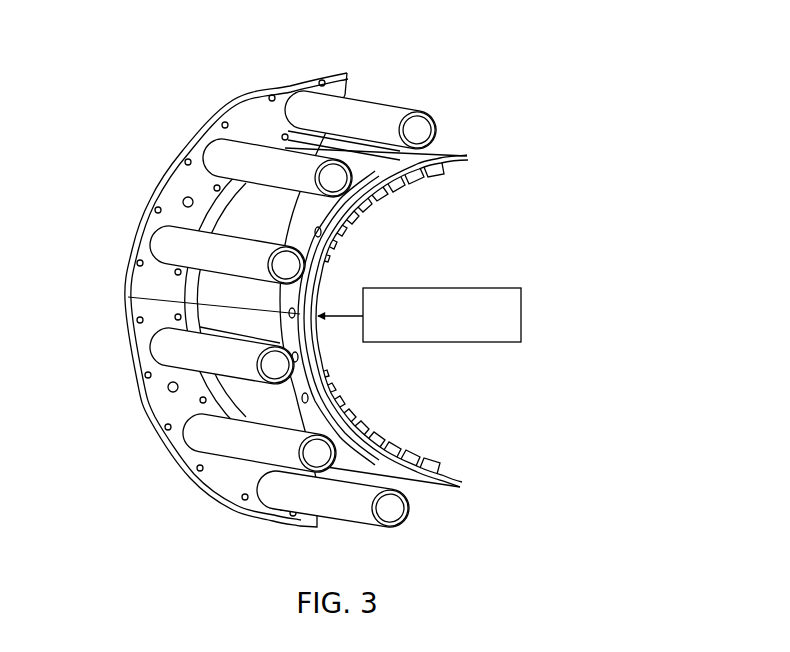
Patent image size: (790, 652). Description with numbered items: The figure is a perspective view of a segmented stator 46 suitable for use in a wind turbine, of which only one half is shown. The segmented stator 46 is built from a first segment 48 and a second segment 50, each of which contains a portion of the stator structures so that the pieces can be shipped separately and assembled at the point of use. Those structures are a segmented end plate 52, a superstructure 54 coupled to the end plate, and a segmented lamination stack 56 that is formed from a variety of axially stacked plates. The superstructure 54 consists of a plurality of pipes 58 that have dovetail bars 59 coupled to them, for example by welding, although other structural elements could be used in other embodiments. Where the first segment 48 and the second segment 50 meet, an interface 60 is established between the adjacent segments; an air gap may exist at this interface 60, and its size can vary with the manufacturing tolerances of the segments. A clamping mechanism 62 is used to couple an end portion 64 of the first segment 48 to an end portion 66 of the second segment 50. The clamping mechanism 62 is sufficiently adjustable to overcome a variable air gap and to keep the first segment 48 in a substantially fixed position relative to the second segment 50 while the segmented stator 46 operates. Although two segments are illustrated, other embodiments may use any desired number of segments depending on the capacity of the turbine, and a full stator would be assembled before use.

The segmented stator 46 is at (507, 60).
The first segment 48 is at (233, 93).
The second segment 50 is at (186, 488).
The segmented end plate 52 is at (177, 193).
The superstructure 54 is at (395, 76).
The segmented lamination stack 56 is at (413, 194).
The pipes 58 is at (400, 108).
The dovetail bars 59 is at (427, 151).
The interface 60 is at (125, 299).
The clamping mechanism 62 is at (522, 306).
The end portion of the first segment 64 is at (125, 266).
The end portion of the second segment 66 is at (125, 327).